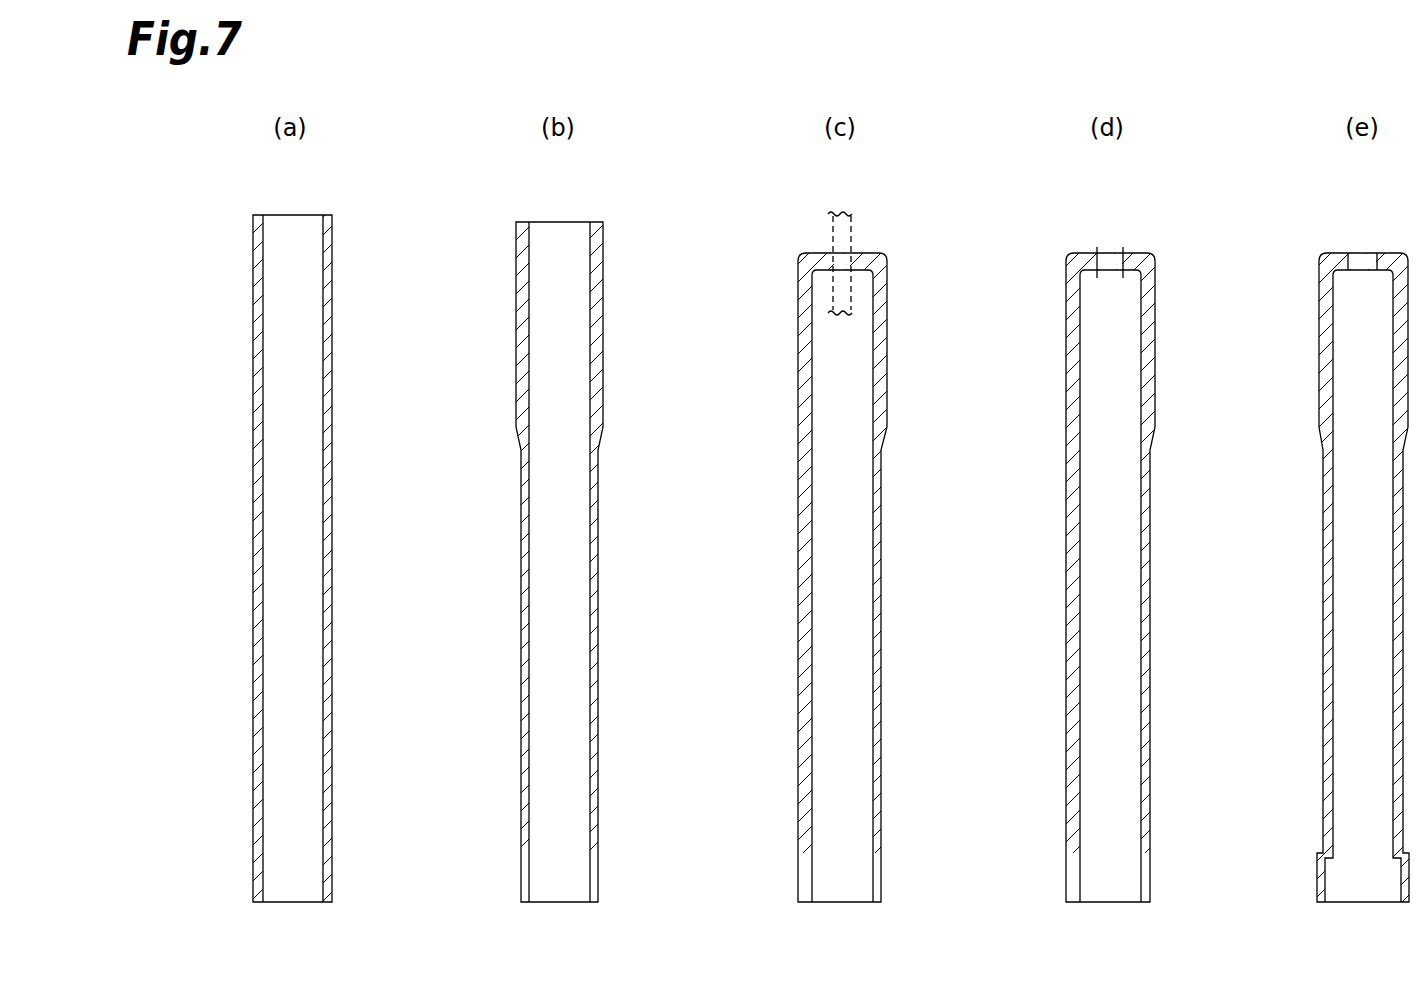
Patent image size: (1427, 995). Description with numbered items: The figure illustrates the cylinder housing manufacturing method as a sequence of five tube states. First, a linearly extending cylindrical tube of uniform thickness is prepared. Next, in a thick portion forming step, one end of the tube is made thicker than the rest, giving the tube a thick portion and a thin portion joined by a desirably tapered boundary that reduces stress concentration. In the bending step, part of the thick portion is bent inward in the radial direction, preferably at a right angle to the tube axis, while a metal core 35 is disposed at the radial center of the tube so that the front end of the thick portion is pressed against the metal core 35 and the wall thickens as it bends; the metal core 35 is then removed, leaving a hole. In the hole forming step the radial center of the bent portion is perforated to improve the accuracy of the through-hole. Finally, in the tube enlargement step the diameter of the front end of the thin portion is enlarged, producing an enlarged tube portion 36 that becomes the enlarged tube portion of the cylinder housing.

The metal core 35 is at (852, 236).
The enlarged tube portion 36 is at (1317, 870).